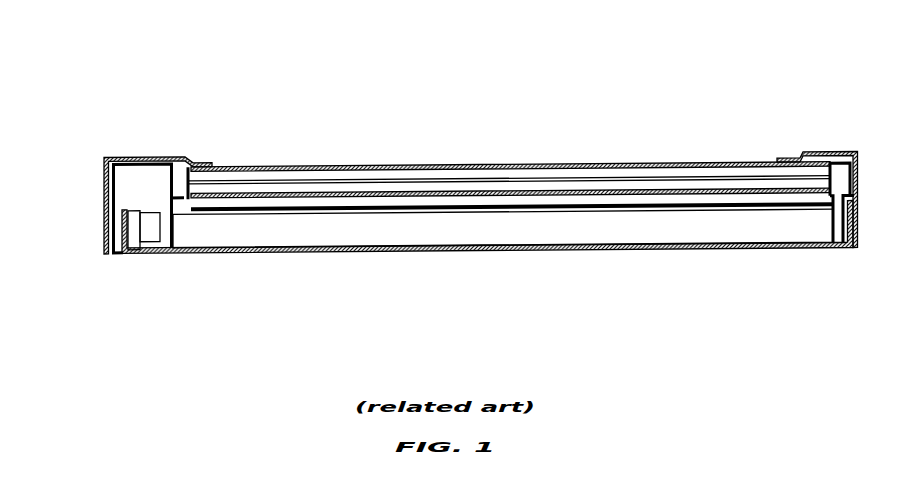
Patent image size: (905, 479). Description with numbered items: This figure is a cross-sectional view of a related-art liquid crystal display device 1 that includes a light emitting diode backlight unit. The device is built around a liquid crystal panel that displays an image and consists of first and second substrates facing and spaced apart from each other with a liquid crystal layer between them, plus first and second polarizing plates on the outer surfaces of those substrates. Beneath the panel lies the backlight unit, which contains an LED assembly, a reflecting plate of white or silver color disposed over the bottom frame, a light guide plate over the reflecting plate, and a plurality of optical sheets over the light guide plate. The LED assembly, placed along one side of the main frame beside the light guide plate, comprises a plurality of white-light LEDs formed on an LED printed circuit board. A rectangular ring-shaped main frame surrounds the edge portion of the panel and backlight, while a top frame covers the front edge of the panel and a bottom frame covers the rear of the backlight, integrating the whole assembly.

The liquid crystal display device 1 is at (352, 49).